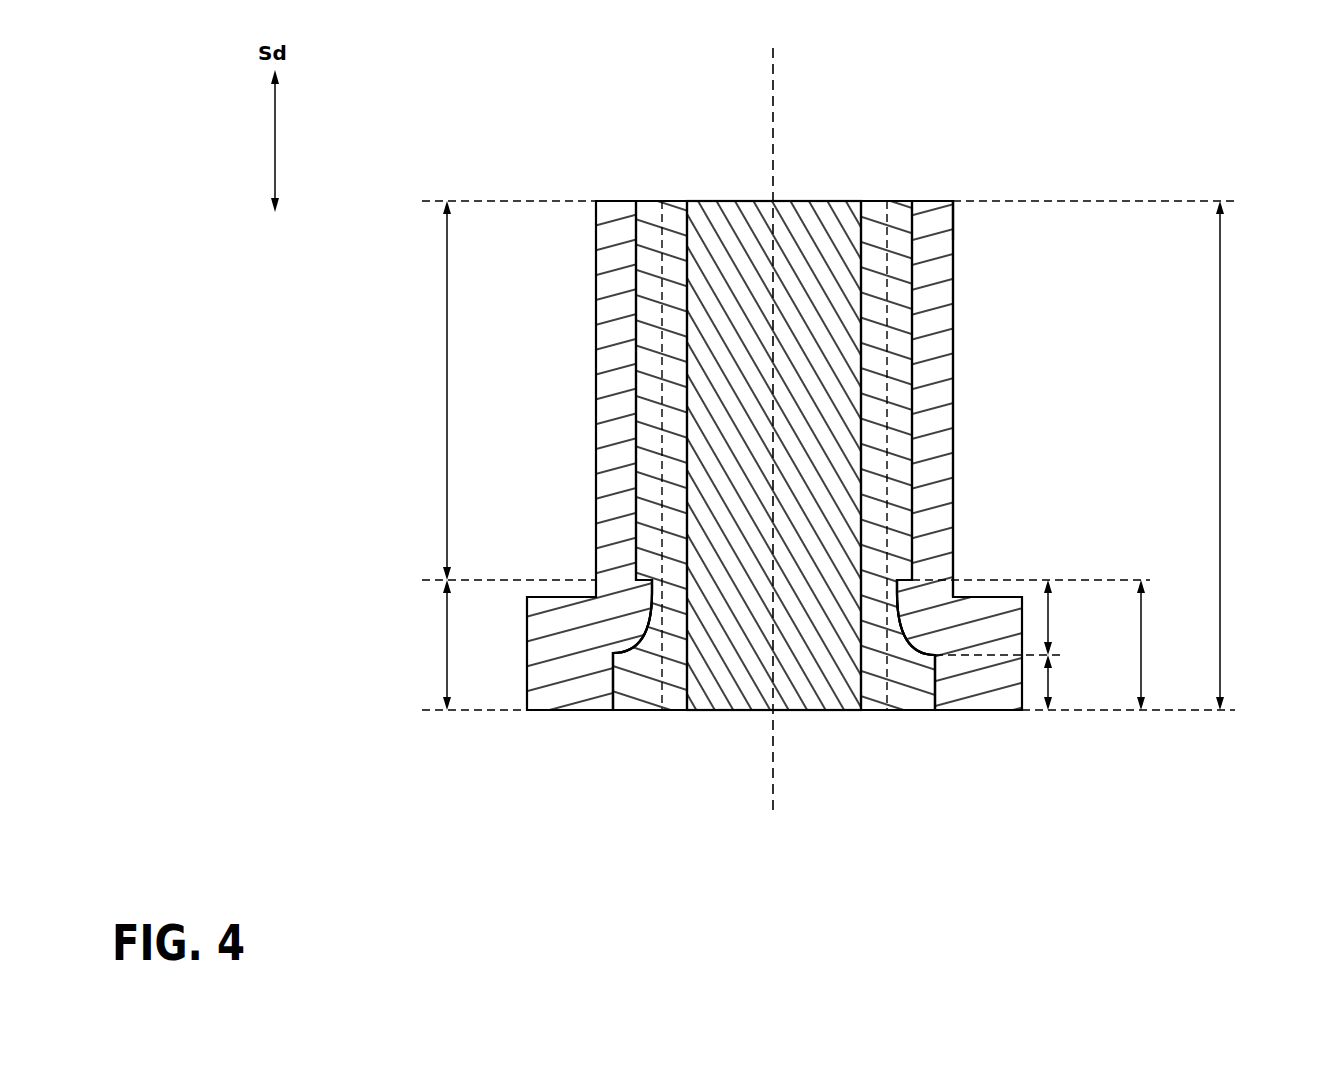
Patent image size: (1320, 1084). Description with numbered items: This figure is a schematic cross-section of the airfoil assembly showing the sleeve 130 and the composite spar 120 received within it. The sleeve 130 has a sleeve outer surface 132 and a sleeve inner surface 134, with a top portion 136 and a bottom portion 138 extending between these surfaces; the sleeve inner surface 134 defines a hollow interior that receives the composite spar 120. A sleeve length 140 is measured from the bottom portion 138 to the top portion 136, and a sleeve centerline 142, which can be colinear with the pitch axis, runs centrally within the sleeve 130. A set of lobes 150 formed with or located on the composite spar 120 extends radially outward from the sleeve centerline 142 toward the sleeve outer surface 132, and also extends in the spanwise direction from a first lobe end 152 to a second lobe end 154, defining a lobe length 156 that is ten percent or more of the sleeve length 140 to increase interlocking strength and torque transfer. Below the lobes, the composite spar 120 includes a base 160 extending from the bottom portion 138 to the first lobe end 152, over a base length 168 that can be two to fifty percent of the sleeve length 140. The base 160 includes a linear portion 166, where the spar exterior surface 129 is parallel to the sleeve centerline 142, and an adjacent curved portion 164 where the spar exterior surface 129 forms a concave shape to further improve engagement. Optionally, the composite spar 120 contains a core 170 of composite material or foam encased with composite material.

The composite spar 120 is at (675, 485).
The spar exterior surface 129 is at (936, 657).
The sleeve 130 is at (970, 275).
The sleeve outer surface 132 is at (955, 373).
The sleeve inner surface 134 is at (912, 436).
The top portion 136 is at (955, 192).
The bottom portion 138 is at (975, 712).
The sleeve length 140 is at (1222, 467).
The sleeve centerline 142 is at (768, 743).
The set of lobes 150 is at (626, 251).
The first lobe end 152 is at (647, 583).
The second lobe end 154 is at (648, 201).
The lobe length 156 is at (447, 372).
The base 160 is at (1143, 653).
The curved portion 164 is at (1050, 620).
The linear portion 166 is at (1050, 684).
The base length 168 is at (440, 640).
The core 170 is at (797, 212).